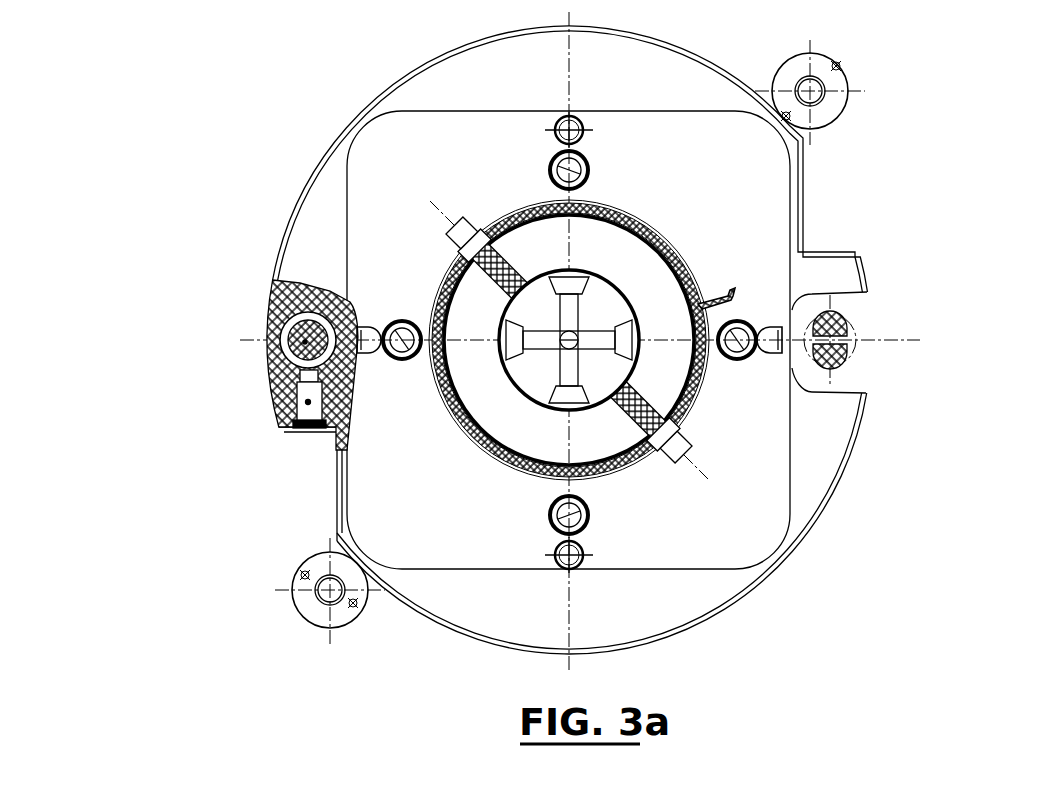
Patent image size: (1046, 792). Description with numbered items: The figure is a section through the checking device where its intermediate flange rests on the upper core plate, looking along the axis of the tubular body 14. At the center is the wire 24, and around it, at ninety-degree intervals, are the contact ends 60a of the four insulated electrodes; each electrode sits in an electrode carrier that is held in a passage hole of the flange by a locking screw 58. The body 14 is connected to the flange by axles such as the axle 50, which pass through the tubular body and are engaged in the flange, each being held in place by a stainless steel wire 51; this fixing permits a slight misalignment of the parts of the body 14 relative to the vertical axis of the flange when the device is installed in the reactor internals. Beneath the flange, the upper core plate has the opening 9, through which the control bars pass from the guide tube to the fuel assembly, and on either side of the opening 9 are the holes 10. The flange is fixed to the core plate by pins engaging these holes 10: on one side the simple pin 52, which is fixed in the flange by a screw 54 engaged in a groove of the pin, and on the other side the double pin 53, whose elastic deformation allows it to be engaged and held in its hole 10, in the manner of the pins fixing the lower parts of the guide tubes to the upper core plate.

The opening 9 is at (603, 111).
The hole 10 is at (848, 320).
The body 14 is at (690, 270).
The wire 24 is at (580, 333).
The axle 50 is at (516, 212).
The stainless steel wire 51 is at (443, 276).
The pin 52 is at (302, 343).
The double pin 53 is at (848, 324).
The screw 54 is at (306, 404).
The locking screw 58 is at (588, 517).
The contact end 60a is at (577, 312).